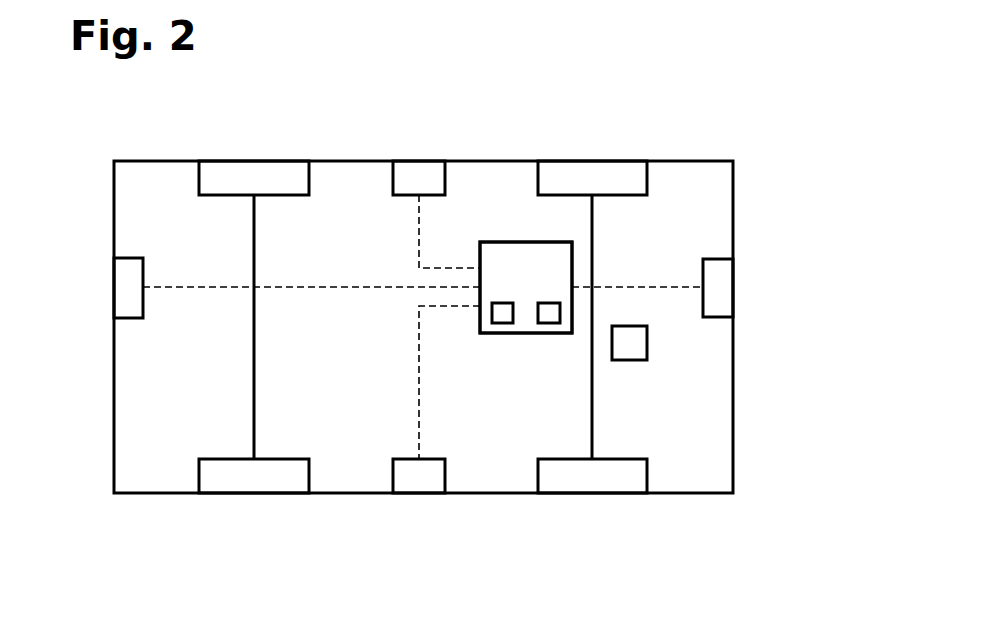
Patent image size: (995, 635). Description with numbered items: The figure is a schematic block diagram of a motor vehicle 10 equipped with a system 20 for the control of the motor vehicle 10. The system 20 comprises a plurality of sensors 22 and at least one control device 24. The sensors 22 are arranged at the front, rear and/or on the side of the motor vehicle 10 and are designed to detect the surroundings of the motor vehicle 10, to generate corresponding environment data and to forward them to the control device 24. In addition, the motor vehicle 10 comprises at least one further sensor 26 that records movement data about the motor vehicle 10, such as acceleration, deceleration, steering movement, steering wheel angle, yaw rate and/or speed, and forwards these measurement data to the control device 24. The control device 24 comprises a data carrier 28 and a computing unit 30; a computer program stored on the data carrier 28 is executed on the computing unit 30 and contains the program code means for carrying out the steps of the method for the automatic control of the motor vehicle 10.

The motor vehicle 10 is at (671, 160).
The system 20 is at (495, 240).
The sensors 22 is at (418, 177).
The control device 24 is at (525, 242).
The further sensor 26 is at (647, 343).
The data carrier 28 is at (128, 276).
The computing unit 30 is at (550, 333).